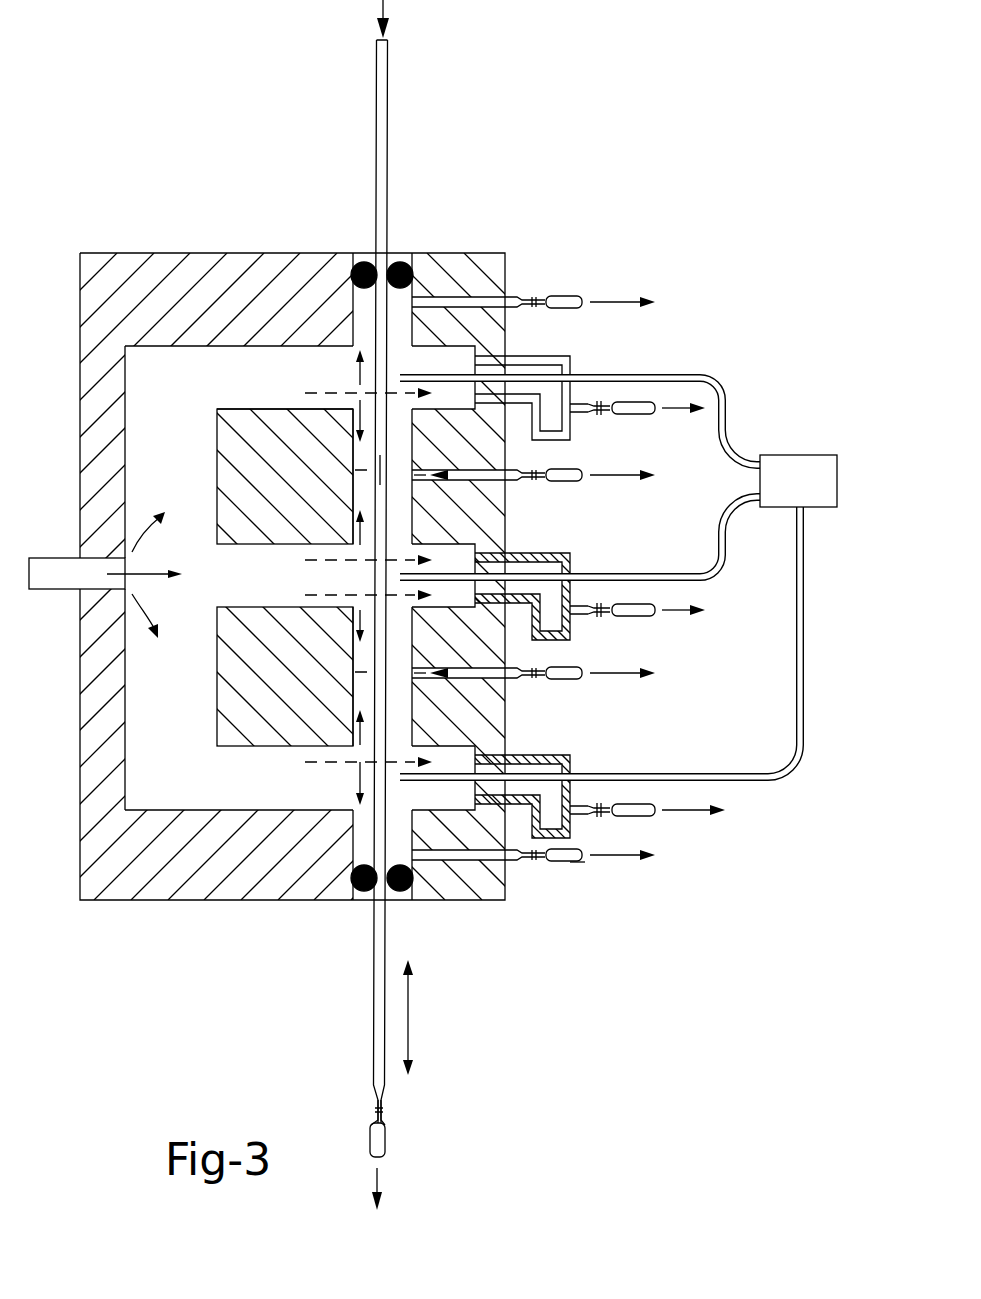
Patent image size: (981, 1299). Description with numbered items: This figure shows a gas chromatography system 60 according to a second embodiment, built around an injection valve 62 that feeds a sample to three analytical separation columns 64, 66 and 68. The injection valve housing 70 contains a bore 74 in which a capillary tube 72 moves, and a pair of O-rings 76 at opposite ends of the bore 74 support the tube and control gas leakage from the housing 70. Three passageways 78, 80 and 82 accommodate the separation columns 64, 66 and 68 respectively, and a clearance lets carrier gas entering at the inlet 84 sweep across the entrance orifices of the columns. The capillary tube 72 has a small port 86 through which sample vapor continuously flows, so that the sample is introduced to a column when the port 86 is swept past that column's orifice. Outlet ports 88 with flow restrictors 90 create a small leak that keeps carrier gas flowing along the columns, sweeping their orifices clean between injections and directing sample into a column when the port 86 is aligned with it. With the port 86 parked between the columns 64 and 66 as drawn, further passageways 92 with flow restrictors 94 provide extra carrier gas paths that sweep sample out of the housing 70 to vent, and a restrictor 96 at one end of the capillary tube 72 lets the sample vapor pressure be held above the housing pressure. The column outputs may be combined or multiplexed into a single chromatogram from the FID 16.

The FID 16 is at (785, 455).
The gas chromatography system 60 is at (572, 214).
The injection valve 62 is at (255, 243).
The separation column 64 is at (692, 376).
The separation column 66 is at (695, 583).
The separation column 68 is at (718, 783).
The injection valve housing 70 is at (85, 500).
The capillary tube 72 is at (385, 934).
The bore 74 is at (363, 867).
The O-rings 76 is at (405, 260).
The passageway 78 is at (435, 358).
The passageway 80 is at (465, 553).
The passageway 82 is at (473, 748).
The inlet 84 is at (60, 590).
The port 86 is at (392, 470).
The outlet ports 88 is at (572, 370).
The flow restrictors 90 is at (616, 414).
The passageways 92 is at (503, 893).
The flow restrictors 94 is at (567, 862).
The restrictor 96 is at (383, 1100).